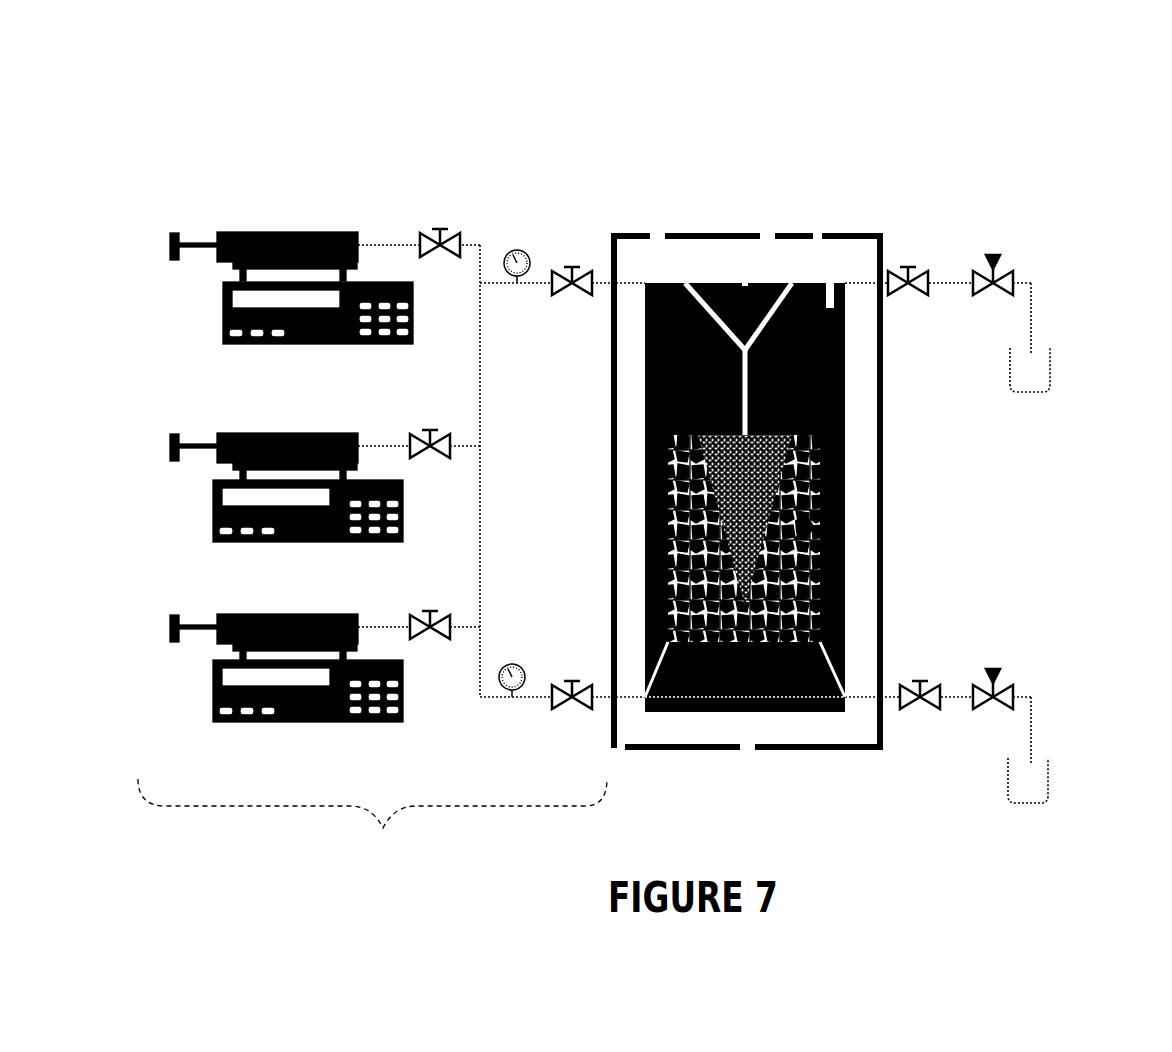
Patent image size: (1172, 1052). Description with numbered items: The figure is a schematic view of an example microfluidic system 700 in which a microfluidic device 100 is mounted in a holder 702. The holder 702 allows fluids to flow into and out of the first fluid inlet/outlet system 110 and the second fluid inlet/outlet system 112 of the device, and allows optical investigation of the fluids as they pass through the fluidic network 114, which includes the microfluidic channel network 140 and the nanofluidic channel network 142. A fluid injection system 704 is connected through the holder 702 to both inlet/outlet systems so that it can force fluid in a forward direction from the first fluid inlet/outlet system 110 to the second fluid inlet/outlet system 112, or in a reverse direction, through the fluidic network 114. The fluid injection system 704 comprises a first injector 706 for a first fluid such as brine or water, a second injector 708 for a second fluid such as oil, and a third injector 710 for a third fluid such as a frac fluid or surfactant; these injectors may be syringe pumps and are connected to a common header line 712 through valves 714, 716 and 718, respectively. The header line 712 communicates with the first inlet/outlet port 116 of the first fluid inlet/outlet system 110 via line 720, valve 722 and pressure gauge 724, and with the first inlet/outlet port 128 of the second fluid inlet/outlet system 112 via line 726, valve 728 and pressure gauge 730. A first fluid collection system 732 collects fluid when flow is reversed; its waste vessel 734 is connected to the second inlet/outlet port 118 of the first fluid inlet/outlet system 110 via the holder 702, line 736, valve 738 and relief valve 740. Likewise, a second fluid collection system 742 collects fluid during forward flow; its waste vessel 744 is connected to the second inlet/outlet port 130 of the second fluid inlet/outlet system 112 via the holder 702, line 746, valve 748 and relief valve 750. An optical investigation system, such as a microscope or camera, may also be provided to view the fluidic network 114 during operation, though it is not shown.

The microfluidic system 700 is at (1059, 141).
The holder 702 is at (724, 288).
The fluid injection system 704 is at (383, 830).
The first injector 706 is at (196, 290).
The second injector 708 is at (196, 486).
The third injector 710 is at (201, 662).
The header line 712 is at (490, 340).
The valve 714 is at (424, 233).
The valve 716 is at (418, 432).
The valve 718 is at (418, 613).
The line 720 is at (603, 272).
The valve 722 is at (570, 268).
The pressure gauge 724 is at (513, 245).
The line 726 is at (540, 705).
The valve 728 is at (598, 688).
The pressure gauge 730 is at (515, 662).
The first fluid collection system 732 is at (1075, 302).
The waste vessel 734 is at (1052, 366).
The line 736 is at (950, 285).
The valve 738 is at (932, 270).
The relief valve 740 is at (1008, 272).
The second fluid collection system 742 is at (1064, 719).
The waste vessel 744 is at (1050, 775).
The line 746 is at (958, 700).
The valve 748 is at (935, 690).
The relief valve 750 is at (1003, 688).
The microfluidic device 100 is at (830, 280).
The first fluid inlet/outlet system 110 is at (740, 293).
The second fluid inlet/outlet system 112 is at (826, 695).
The fluidic network 114 is at (836, 575).
The first inlet/outlet port 116 is at (693, 270).
The second inlet/outlet port 118 is at (805, 278).
The first inlet/outlet port 128 is at (640, 713).
The second inlet/outlet port 130 is at (853, 710).
The microfluidic channel network 140 is at (768, 495).
The nanofluidic channel network 142 is at (820, 537).